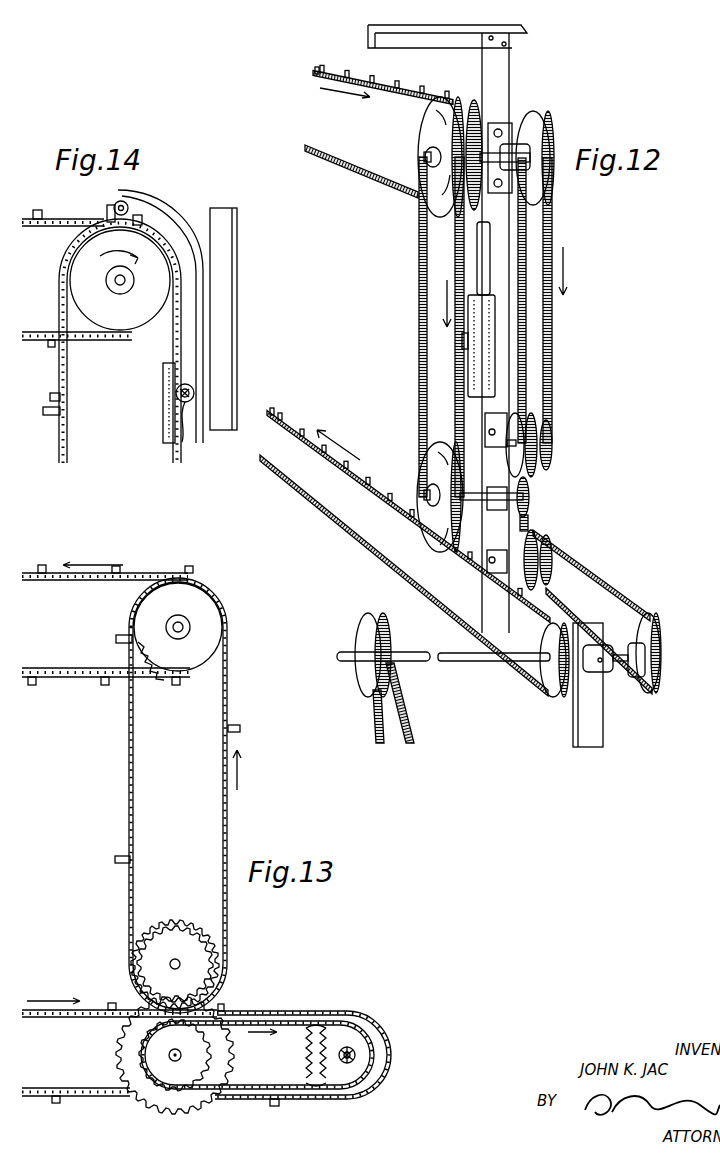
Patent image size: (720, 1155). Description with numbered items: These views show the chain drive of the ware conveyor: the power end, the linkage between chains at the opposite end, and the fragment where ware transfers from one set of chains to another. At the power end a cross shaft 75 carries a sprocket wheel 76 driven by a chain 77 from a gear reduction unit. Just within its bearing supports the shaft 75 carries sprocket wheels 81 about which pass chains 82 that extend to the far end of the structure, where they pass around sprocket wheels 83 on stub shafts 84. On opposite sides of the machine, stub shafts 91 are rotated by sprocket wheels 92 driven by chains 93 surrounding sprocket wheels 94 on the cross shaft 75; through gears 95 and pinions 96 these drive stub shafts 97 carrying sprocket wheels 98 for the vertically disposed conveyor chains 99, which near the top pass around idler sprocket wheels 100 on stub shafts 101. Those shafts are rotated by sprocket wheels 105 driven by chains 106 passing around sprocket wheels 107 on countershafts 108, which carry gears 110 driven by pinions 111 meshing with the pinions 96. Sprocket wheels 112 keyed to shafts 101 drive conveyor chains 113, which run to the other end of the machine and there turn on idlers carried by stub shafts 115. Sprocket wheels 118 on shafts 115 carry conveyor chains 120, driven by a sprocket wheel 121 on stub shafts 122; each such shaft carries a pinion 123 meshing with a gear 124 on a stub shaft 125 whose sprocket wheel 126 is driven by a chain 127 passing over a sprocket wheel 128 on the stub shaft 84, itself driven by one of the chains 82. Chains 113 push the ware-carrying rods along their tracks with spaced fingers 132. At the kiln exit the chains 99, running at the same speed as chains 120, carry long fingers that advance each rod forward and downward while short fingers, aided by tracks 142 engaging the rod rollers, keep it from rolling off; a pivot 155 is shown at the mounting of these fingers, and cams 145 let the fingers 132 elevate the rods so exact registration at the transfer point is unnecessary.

In FIG. 12, the cross shaft 75 is at (460, 662).
In FIG. 12, the sprocket wheel 76 is at (368, 674).
In FIG. 12, the chain 77 is at (374, 714).
In FIG. 12, the sprocket wheels 81 is at (553, 685).
In FIG. 13, the chains 82 is at (94, 1009).
In FIG. 12, the chains 82 is at (370, 487).
In FIG. 13, the sprocket wheels 83 is at (308, 1040).
In FIG. 13, the stub shafts 84 is at (349, 1060).
In FIG. 12, the stub shafts 91 is at (538, 535).
In FIG. 12, the sprocket wheels 92 is at (555, 585).
In FIG. 12, the chains 93 is at (590, 578).
In FIG. 12, the sprocket wheels 94 is at (652, 625).
In FIG. 12, the gears 95 is at (525, 527).
In FIG. 12, the pinions 96 is at (530, 497).
In FIG. 12, the stub shafts 97 is at (423, 497).
In FIG. 12, the sprocket wheels 98 is at (428, 467).
In FIG. 14, the conveyor chains 99 is at (67, 370).
In FIG. 12, the conveyor chains 99 is at (419, 344).
In FIG. 14, the idler sprocket wheels 100 is at (83, 272).
In FIG. 12, the idler sprocket wheels 100 is at (440, 133).
In FIG. 14, the stub shafts 101 is at (108, 285).
In FIG. 12, the stub shafts 101 is at (420, 157).
In FIG. 12, the sprocket wheels 105 is at (530, 120).
In FIG. 12, the chains 106 is at (553, 233).
In FIG. 12, the sprocket wheels 107 is at (540, 443).
In FIG. 12, the countershafts 108 is at (528, 440).
In FIG. 12, the gears 110 is at (513, 418).
In FIG. 12, the pinions 111 is at (510, 480).
In FIG. 12, the sprocket wheels 112 is at (477, 122).
In FIG. 14, the conveyor chains 113 is at (50, 218).
In FIG. 13, the conveyor chains 113 is at (136, 573).
In FIG. 12, the conveyor chains 113 is at (407, 93).
In FIG. 13, the stub shafts 115 is at (178, 627).
In FIG. 13, the sprocket wheels 118 is at (166, 608).
In FIG. 13, the conveyor chains 120 is at (129, 760).
In FIG. 13, the gear 121 is at (214, 947).
In FIG. 13, the stub shafts 122 is at (180, 965).
In FIG. 13, the pinion 123 is at (170, 943).
In FIG. 13, the gear 124 is at (135, 1043).
In FIG. 13, the stub shaft 125 is at (172, 1062).
In FIG. 13, the sprocket wheel 126 is at (192, 1067).
In FIG. 13, the chain 127 is at (255, 1085).
In FIG. 13, the sprocket wheel 128 is at (357, 1042).
In FIG. 14, the fingers 132 is at (40, 201).
In FIG. 13, the fingers 132 is at (57, 557).
In FIG. 14, the tracks 142 is at (187, 228).
In FIG. 14, the cams 145 is at (143, 213).
In FIG. 14, the pivot 155 is at (193, 391).